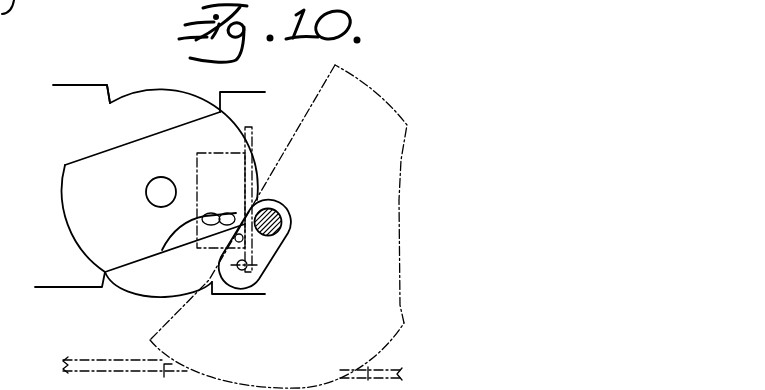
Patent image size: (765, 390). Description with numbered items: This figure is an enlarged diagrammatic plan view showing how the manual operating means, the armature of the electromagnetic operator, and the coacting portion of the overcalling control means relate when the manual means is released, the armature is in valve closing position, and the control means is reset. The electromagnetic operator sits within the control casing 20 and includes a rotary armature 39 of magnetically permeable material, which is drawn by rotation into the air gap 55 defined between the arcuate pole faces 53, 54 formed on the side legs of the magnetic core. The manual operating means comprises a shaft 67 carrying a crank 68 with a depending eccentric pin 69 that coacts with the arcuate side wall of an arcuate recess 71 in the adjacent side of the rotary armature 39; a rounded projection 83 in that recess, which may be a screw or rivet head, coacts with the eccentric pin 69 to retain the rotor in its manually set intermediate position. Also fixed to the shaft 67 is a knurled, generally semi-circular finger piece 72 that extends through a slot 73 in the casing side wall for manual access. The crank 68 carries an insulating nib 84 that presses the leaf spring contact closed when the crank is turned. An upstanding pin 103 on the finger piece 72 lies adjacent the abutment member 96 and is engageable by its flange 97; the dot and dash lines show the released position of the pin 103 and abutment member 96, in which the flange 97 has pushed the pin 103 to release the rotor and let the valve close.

The control casing 20 is at (111, 358).
The rotary armature 39 is at (77, 245).
The arcuate pole face 53 is at (154, 88).
The arcuate pole face 54 is at (140, 283).
The air gap 55 is at (160, 113).
The shaft 67 is at (282, 222).
The crank 68 is at (282, 263).
The eccentric pin 69 is at (259, 268).
The arcuate recess 71 is at (170, 234).
The finger piece 72 is at (371, 378).
The slot 73 is at (166, 372).
The rounded projection 83 is at (236, 214).
The insulating nib 84 is at (238, 289).
The abutment member 96 is at (228, 153).
The flange 97 is at (256, 128).
The upstanding pin 103 is at (192, 249).